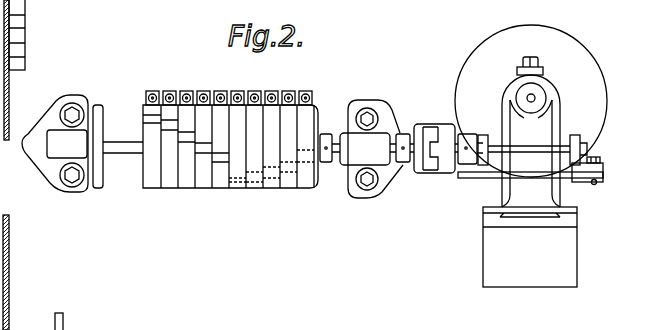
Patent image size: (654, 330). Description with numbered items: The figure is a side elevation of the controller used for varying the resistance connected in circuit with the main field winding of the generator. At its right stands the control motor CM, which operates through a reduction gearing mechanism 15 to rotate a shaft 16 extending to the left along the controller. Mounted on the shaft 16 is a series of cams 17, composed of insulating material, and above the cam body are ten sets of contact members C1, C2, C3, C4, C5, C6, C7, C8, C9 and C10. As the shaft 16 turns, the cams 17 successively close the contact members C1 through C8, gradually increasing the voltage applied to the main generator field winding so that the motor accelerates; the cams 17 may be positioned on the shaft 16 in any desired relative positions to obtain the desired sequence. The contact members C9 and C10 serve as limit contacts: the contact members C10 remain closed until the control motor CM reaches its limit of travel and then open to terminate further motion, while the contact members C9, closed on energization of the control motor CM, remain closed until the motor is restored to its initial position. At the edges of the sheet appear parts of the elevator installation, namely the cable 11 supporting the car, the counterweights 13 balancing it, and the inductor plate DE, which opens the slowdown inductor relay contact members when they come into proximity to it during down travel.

The cable 11 is at (8, 285).
The counterweights 13 is at (25, 12).
The reduction gearing mechanism 15 is at (512, 185).
The shaft 16 is at (337, 132).
The cams 17 is at (186, 188).
The contact members C1 is at (152, 91).
The contact members C2 is at (169, 91).
The contact members C3 is at (186, 91).
The contact members C4 is at (203, 91).
The contact members C5 is at (220, 91).
The contact members C6 is at (237, 91).
The contact members C7 is at (254, 91).
The contact members C8 is at (271, 91).
The contact members C9 is at (288, 91).
The contact members C10 is at (305, 91).
The control motor CM is at (578, 12).
The inductor plate DE is at (72, 329).